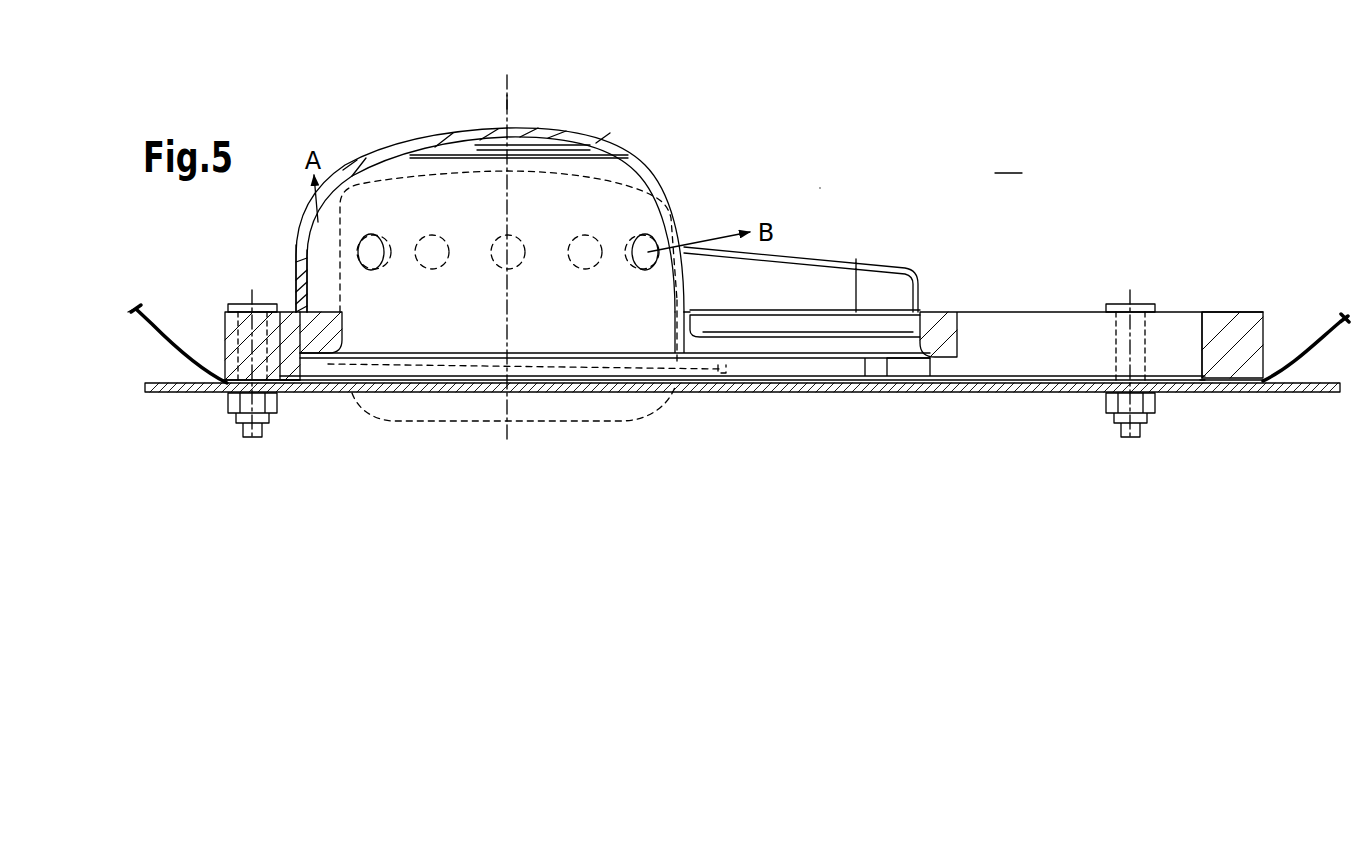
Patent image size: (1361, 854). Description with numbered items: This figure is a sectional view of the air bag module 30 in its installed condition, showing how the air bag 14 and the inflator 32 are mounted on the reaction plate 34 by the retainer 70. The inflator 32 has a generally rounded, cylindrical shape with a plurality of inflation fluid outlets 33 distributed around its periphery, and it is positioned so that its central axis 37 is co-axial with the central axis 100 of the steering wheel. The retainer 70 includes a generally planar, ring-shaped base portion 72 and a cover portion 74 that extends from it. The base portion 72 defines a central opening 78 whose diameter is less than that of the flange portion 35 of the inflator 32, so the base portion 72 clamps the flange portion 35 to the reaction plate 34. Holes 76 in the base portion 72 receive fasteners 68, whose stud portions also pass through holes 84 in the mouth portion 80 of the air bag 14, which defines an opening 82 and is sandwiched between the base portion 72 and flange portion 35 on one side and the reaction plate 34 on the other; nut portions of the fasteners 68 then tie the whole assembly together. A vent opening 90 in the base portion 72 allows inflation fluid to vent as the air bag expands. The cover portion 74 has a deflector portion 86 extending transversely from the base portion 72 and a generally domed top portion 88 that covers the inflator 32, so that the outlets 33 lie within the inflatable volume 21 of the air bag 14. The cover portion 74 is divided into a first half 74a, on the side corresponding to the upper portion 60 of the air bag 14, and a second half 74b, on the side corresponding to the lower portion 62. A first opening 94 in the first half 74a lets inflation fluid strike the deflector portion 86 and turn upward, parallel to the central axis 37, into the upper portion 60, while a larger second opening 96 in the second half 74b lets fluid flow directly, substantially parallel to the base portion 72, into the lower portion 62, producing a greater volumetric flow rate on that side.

The air bag 14 is at (130, 328).
The inflatable volume 21 is at (1008, 161).
The air bag module 30 is at (822, 187).
The inflator 32 is at (450, 408).
The inflation fluid outlets 33 is at (514, 245).
The reaction plate 34 is at (168, 393).
The flange portion 35 is at (760, 392).
The central axis 37 is at (508, 90).
The upper portion 60 is at (170, 347).
The lower portion 62 is at (1300, 348).
The fasteners 68 is at (246, 432).
The retainer 70 is at (874, 262).
The base portion 72 is at (943, 312).
The cover portion 74 is at (915, 277).
The first half 74a is at (405, 142).
The second half 74b is at (601, 130).
The holes 76 is at (238, 312).
The central opening 78 is at (641, 331).
The mouth portion 80 is at (283, 388).
The opening 82 is at (320, 397).
The holes 84 is at (228, 360).
The deflector portion 86 is at (298, 262).
The top portion 88 is at (622, 138).
The vent opening 90 is at (794, 340).
The first opening 94 is at (338, 190).
The second opening 96 is at (646, 155).
The central axis 100 is at (507, 103).